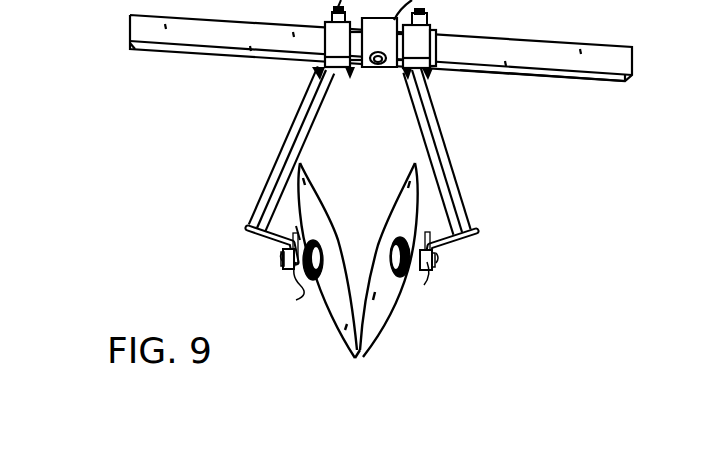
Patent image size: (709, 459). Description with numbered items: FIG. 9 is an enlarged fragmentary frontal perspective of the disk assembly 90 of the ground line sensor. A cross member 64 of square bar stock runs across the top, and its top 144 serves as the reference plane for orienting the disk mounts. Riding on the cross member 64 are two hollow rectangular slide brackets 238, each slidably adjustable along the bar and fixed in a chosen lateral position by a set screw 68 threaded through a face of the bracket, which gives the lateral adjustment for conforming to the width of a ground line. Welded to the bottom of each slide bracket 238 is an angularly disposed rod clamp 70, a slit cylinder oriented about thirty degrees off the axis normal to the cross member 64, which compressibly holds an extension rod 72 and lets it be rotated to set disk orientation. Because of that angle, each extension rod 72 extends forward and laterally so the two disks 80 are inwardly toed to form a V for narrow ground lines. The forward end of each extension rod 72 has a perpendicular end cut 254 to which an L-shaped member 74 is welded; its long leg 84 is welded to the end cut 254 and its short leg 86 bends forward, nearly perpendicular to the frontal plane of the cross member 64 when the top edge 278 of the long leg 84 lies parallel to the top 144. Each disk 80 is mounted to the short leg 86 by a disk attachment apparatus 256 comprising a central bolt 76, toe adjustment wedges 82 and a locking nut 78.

The top of cross member 144 is at (600, 48).
The cross member 64 is at (580, 73).
The set screw 68 is at (428, 15).
The rectangular slide bracket 238 is at (325, 58).
The rod clamp 70 is at (343, 70).
The extension rod 72 is at (272, 188).
The perpendicular end cut 254 is at (283, 192).
The L-shaped member 74 is at (248, 239).
The top edge of long leg 278 is at (295, 226).
The disk 80 is at (375, 322).
The toe adjustment wedge 82 is at (302, 284).
The disk attachment apparatus 256 is at (268, 286).
The central bolt 76 is at (283, 271).
The locking nut 78 is at (280, 266).
The long leg 84 is at (282, 256).
The short leg 86 is at (300, 280).
The disk assembly 90 is at (468, 153).